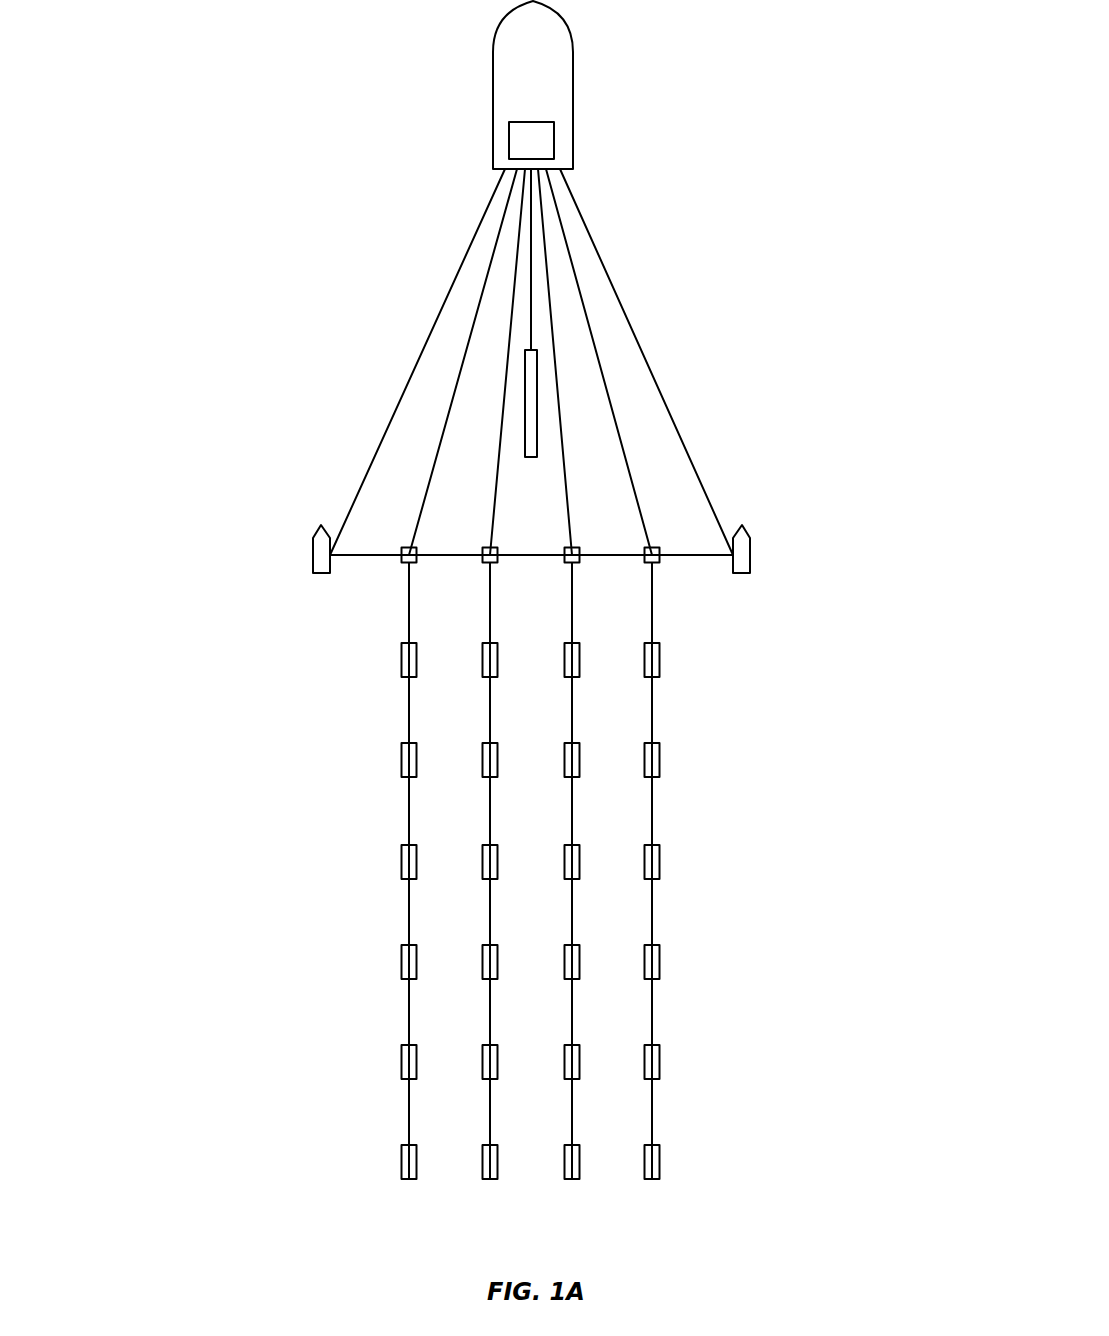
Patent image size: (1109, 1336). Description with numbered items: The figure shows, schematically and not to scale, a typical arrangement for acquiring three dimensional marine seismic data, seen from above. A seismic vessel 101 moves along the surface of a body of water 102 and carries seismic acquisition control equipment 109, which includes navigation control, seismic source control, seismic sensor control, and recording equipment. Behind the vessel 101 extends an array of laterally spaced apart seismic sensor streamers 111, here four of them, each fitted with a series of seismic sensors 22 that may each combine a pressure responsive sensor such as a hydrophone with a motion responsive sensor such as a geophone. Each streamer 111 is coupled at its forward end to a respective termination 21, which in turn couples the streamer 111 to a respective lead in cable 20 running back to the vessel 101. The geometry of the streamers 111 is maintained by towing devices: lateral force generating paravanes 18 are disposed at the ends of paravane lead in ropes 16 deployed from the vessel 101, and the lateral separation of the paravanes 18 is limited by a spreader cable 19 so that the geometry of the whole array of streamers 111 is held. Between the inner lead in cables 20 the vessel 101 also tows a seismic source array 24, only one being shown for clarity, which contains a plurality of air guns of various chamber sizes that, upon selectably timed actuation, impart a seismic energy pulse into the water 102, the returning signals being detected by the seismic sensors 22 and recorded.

The seismic vessel 101 is at (575, 45).
The seismic acquisition control equipment 109 is at (555, 148).
The body of water 102 is at (771, 141).
The paravane lead in ropes 16 is at (405, 390).
The seismic source array 24 is at (537, 397).
The lead in cable 20 is at (424, 500).
The spreader cable 19 is at (697, 555).
The paravanes 18 is at (313, 555).
The termination 21 is at (402, 552).
The seismic sensor streamers 111 is at (490, 580).
The seismic sensors 22 is at (401, 660).